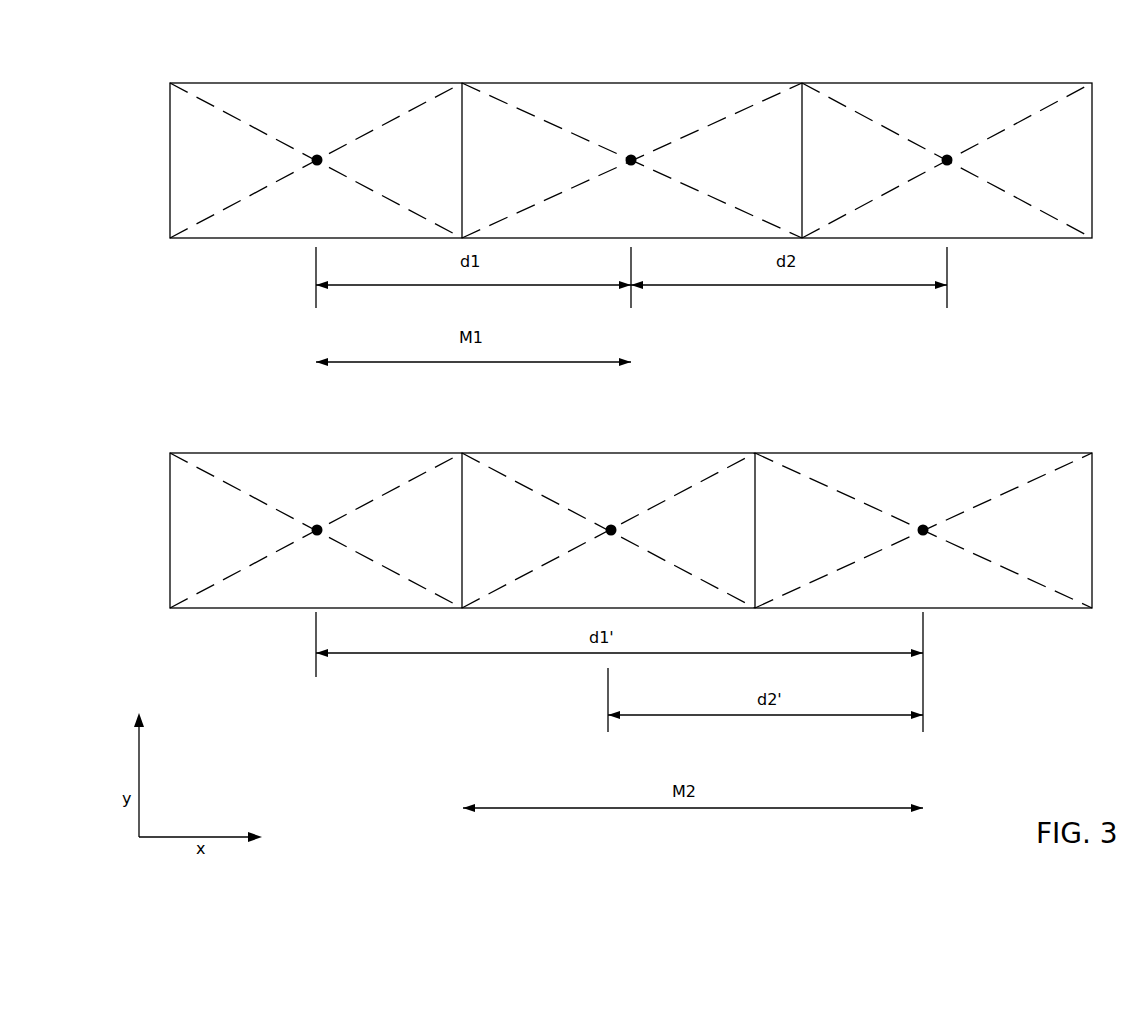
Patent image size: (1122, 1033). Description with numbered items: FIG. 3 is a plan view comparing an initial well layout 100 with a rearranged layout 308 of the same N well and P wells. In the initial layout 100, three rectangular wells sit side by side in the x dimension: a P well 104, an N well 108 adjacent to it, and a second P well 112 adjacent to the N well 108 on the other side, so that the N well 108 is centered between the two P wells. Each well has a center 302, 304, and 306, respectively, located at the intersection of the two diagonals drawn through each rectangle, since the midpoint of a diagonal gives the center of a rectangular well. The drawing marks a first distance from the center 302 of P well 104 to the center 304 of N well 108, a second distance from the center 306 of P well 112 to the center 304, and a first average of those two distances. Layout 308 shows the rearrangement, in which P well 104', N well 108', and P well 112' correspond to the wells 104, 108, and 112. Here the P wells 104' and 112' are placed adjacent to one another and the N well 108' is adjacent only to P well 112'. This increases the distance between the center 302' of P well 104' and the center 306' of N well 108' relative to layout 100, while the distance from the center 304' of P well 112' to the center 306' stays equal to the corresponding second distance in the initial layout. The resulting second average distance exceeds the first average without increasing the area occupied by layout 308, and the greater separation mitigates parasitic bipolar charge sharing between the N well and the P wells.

The initial layout 100 is at (730, 47).
The P well 104 is at (316, 160).
The N well 108 is at (632, 160).
The P well 112 is at (947, 160).
The center of P well 104 302 is at (349, 160).
The center of N well 108 304 is at (663, 160).
The center of P well 112 306 is at (979, 160).
The rearranged layout 308 is at (730, 415).
The P well 104' is at (316, 530).
The P well 112' is at (608, 530).
The N well 108' is at (923, 530).
The center of P well 104' 302' is at (351, 530).
The center of P well 112' 304' is at (645, 530).
The center of N well 108' 306' is at (957, 530).